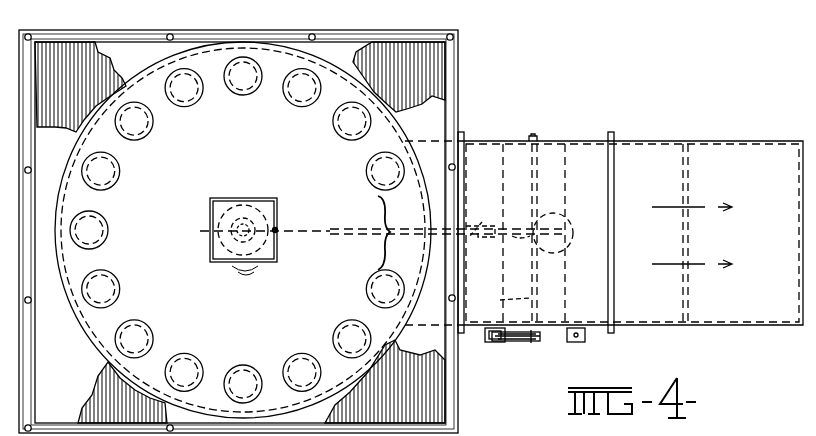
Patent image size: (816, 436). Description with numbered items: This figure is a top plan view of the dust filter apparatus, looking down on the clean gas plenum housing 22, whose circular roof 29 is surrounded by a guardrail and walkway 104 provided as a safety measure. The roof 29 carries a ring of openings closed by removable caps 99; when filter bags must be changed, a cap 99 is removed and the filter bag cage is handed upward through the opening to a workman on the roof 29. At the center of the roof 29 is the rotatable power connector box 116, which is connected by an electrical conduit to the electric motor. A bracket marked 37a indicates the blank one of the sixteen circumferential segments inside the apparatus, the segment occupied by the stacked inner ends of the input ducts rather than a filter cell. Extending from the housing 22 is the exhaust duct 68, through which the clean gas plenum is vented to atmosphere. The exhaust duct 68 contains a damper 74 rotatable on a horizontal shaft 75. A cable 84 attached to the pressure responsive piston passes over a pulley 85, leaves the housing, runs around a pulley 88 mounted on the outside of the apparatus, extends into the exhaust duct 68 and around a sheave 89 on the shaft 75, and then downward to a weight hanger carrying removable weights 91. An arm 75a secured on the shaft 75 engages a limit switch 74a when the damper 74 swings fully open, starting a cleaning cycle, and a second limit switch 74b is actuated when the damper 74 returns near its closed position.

The guardrail and walkway 104 is at (420, 32).
The clean gas plenum housing 22 is at (477, 113).
The roof 29 is at (266, 170).
The cap 99 is at (230, 87).
The rotatable power connector box 116 is at (211, 228).
The pulley 85 is at (280, 228).
The cable 84 is at (300, 238).
The blank segment 37a is at (401, 233).
The pulley 88 is at (487, 214).
The sheave 89 is at (530, 238).
The removable weights 91 is at (568, 224).
The exhaust duct 68 is at (590, 137).
The shaft 75 is at (502, 302).
The damper 74 is at (566, 284).
The limit switch 74a is at (566, 345).
The second limit switch 74b is at (480, 344).
The arm 75a is at (512, 343).